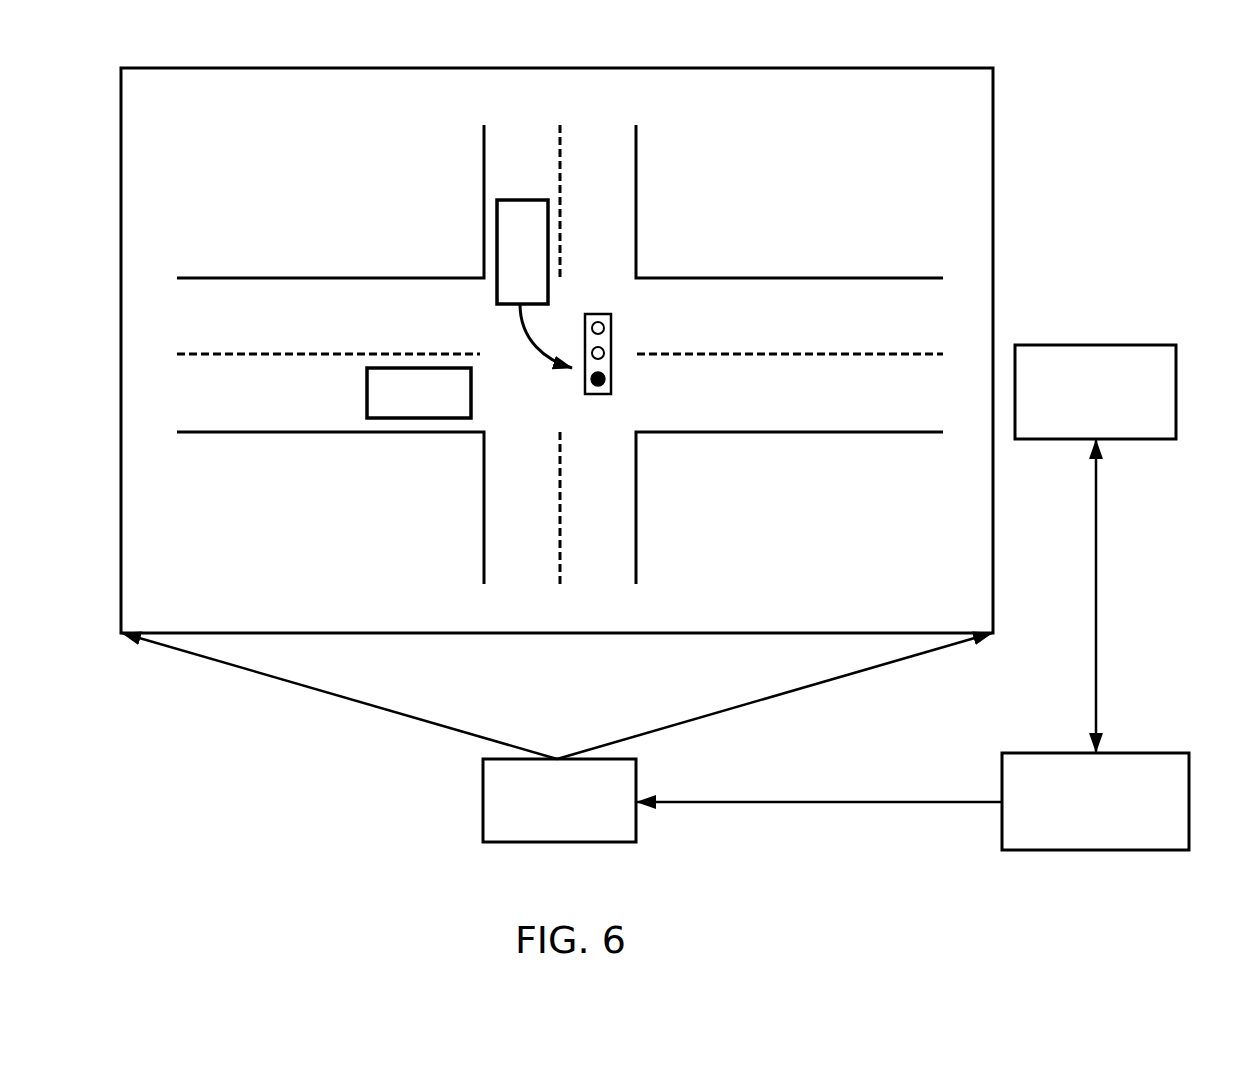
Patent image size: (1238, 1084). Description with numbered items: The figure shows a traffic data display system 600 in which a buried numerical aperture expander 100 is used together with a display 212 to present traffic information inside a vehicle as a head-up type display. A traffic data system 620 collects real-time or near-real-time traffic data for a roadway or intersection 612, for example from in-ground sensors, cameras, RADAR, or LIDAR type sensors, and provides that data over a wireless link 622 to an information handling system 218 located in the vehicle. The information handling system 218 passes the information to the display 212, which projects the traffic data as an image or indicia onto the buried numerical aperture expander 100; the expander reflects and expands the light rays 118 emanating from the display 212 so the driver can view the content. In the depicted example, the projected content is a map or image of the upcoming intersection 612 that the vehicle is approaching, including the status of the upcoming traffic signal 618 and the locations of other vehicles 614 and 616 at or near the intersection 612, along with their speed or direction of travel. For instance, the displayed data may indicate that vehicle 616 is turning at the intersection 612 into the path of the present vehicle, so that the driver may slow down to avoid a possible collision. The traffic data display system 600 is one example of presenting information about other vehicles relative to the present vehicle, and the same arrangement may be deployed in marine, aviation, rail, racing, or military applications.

The buried numerical aperture expander 100 is at (993, 110).
The traffic data display system 600 is at (847, 152).
The intersection 612 is at (700, 470).
The vehicle 614 is at (392, 419).
The vehicle 616 is at (497, 226).
The traffic signal 618 is at (612, 333).
The traffic data system 620 is at (1133, 345).
The wireless link 622 is at (1097, 537).
The information handling system 218 is at (1145, 753).
The display 212 is at (483, 798).
The light rays 118 is at (442, 722).